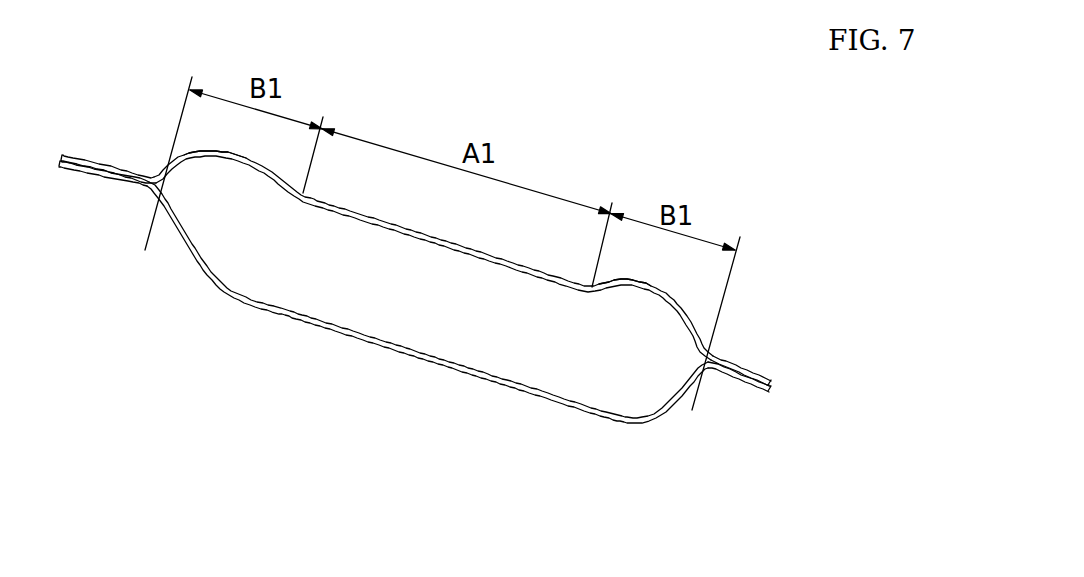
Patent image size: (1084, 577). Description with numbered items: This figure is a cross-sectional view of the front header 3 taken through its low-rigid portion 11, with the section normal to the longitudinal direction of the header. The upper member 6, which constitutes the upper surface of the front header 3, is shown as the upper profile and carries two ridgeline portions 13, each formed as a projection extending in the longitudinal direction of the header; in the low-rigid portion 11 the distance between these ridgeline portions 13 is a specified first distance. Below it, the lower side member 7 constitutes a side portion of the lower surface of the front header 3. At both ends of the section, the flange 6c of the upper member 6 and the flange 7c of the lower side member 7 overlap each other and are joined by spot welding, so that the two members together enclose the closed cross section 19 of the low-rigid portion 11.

The front header 3 is at (864, 275).
The upper member 6 is at (698, 323).
The flange 6c is at (93, 160).
The lower side member 7 is at (530, 394).
The flange 7c is at (90, 187).
The low-rigid portion 11 is at (183, 118).
The ridgeline portion 13 is at (240, 156).
The closed cross section 19 is at (444, 322).